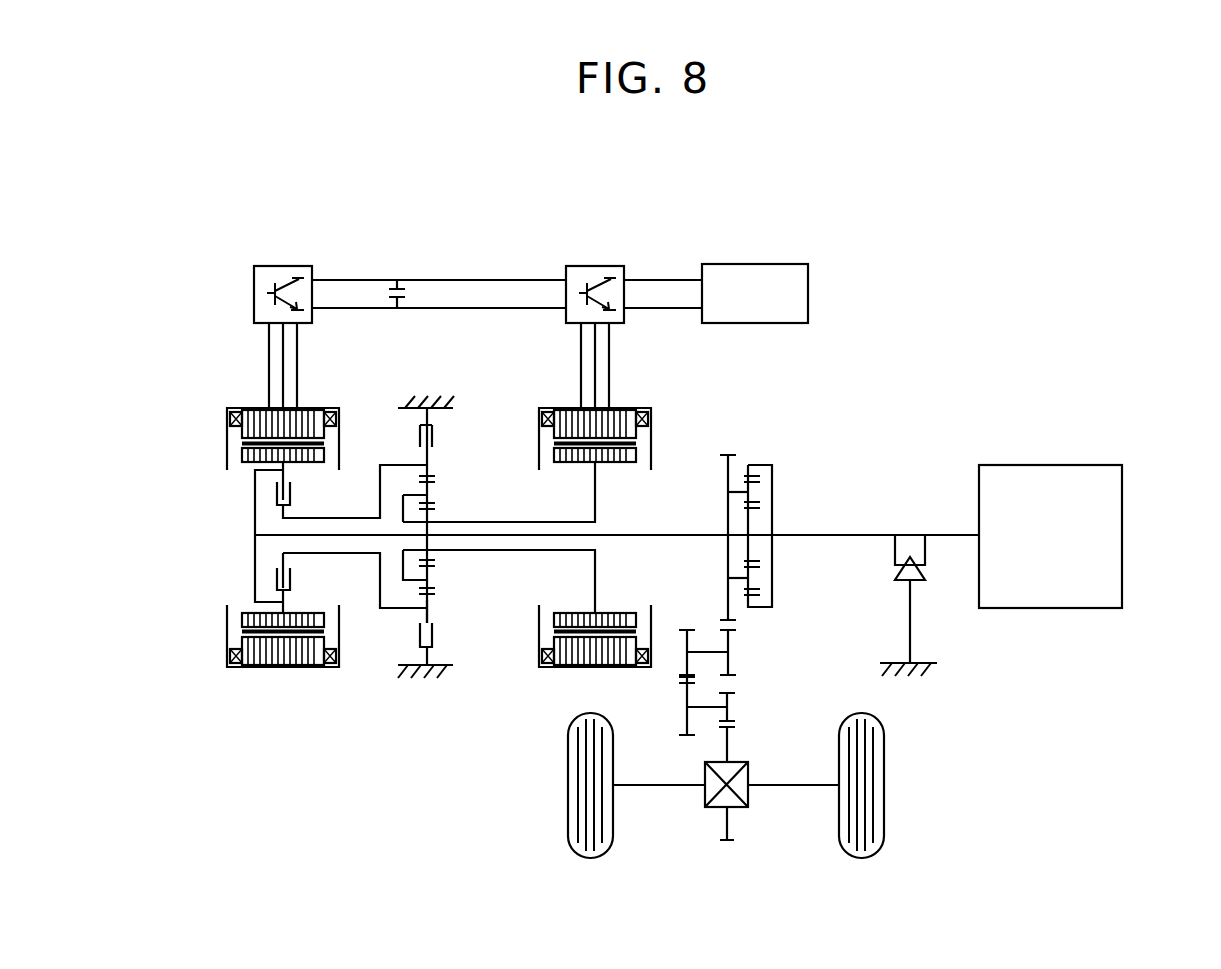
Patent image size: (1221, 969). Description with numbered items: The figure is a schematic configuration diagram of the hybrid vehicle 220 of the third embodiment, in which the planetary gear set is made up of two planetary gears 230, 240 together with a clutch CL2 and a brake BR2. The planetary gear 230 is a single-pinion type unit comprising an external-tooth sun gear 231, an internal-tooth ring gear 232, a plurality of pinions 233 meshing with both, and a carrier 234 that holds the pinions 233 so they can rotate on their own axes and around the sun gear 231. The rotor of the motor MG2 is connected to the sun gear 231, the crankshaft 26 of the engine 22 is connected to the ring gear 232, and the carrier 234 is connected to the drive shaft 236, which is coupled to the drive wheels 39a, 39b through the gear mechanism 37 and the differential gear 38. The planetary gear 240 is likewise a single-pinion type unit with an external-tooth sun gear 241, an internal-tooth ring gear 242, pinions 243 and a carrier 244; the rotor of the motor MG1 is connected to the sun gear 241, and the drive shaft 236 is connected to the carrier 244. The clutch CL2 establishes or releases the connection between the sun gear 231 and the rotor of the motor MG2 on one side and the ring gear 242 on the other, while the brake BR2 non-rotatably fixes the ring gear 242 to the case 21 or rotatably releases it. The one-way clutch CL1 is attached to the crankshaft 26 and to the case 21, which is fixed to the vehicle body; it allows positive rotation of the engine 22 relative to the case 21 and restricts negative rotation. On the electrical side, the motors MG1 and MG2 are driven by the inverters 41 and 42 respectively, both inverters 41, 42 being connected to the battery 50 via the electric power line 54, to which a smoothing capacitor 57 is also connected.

The hybrid vehicle 220 is at (901, 238).
The inverter 42 is at (282, 266).
The inverter 41 is at (596, 266).
The battery 50 is at (746, 264).
The electric power line 54 is at (475, 308).
The smoothing capacitor 57 is at (403, 289).
The motor MG2 is at (325, 408).
The motor MG1 is at (637, 408).
The clutch CL2 is at (277, 495).
The crankshaft 26 is at (937, 535).
The brake BR2 is at (410, 443).
The planetary gear 240 is at (458, 550).
The carrier 244 is at (403, 503).
The sun gear 241 is at (428, 560).
The pinions 243 is at (428, 587).
The ring gear 242 is at (428, 610).
The planetary gear 230 is at (759, 510).
The drive shaft 236 is at (685, 522).
The ring gear 232 is at (772, 603).
The carrier 234 is at (738, 478).
The sun gear 231 is at (752, 553).
The pinions 233 is at (752, 577).
The engine 22 is at (1053, 465).
The one-way clutch CL1 is at (913, 577).
The case 21 is at (927, 660).
The gear mechanism 37 is at (742, 661).
The differential gear 38 is at (705, 774).
The drive wheel 39a is at (568, 785).
The drive wheel 39b is at (884, 785).